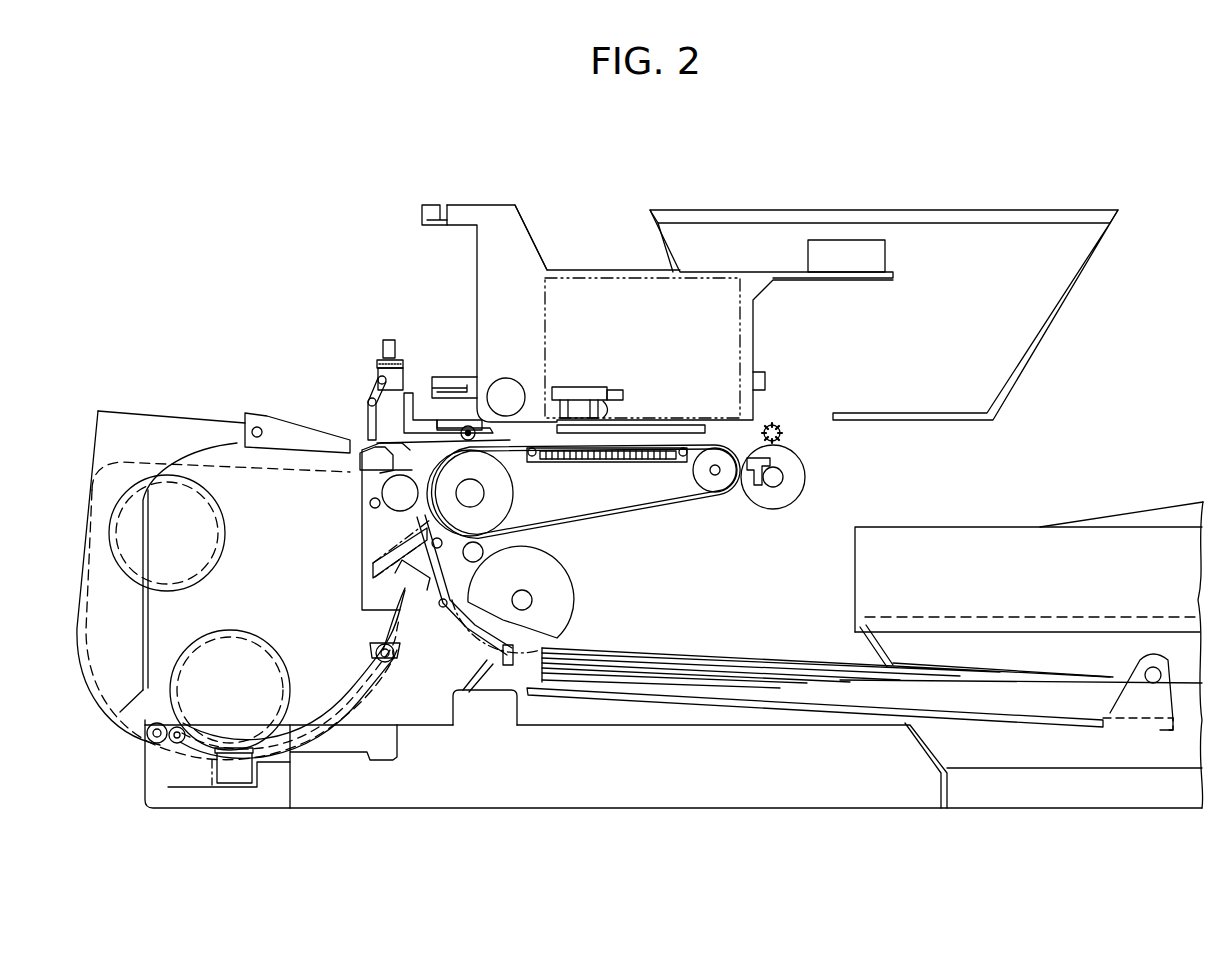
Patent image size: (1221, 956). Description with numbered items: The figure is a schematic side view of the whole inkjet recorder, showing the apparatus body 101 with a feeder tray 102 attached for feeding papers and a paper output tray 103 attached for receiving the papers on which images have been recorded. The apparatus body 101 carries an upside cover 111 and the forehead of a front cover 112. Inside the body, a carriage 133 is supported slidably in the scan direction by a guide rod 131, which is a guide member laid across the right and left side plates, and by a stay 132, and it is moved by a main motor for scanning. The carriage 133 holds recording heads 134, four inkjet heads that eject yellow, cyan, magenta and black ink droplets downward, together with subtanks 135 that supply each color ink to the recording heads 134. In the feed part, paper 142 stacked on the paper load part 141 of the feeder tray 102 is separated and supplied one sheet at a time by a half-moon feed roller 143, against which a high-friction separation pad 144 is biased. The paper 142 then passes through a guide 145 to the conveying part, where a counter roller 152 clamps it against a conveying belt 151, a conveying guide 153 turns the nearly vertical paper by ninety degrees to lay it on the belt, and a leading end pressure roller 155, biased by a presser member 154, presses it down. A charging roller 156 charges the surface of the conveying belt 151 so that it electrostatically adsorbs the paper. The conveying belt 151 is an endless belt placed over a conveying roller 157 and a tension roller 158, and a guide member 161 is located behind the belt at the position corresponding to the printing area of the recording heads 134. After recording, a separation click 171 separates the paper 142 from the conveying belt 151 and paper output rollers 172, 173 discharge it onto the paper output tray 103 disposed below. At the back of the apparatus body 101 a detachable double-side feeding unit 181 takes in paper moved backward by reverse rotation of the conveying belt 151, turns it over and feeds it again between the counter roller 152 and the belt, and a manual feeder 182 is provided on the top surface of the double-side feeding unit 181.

The apparatus body 101 is at (880, 166).
The feeder tray 102 is at (1027, 790).
The paper output tray 103 is at (1139, 548).
The upside cover 111 is at (990, 213).
The front cover 112 is at (1052, 322).
The guide rod 131 is at (507, 380).
The stay 132 is at (432, 204).
The carriage 133 is at (525, 242).
The recording heads 134 is at (665, 424).
The subtanks 135 is at (624, 297).
The paper load part 141 is at (622, 702).
The paper 142 is at (711, 686).
The feed roller 143 is at (576, 603).
The separation pad 144 is at (481, 698).
The guide 145 is at (432, 595).
The conveying belt 151 is at (628, 511).
The counter roller 152 is at (386, 493).
The conveying guide 153 is at (372, 420).
The presser member 154 is at (380, 380).
The leading end pressure roller 155 is at (462, 427).
The charging roller 156 is at (490, 553).
The conveying roller 157 is at (512, 490).
The tension roller 158 is at (722, 490).
The guide member 161 is at (593, 463).
The separation click 171 is at (760, 490).
The paper output roller 172 is at (800, 475).
The paper output roller 173 is at (783, 434).
The double-side feeding unit 181 is at (105, 458).
The manual feeder 182 is at (247, 408).